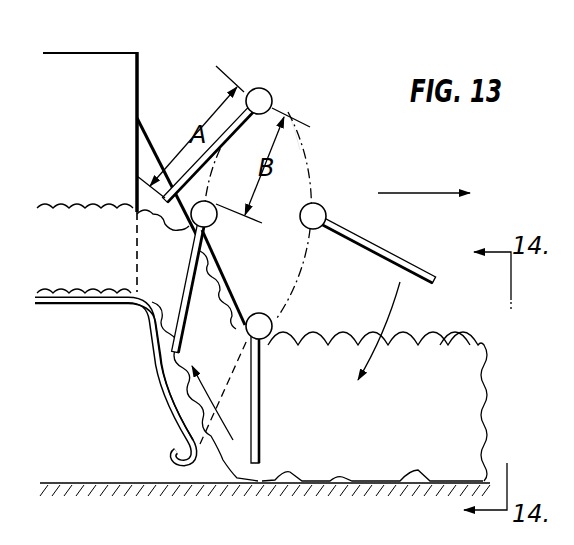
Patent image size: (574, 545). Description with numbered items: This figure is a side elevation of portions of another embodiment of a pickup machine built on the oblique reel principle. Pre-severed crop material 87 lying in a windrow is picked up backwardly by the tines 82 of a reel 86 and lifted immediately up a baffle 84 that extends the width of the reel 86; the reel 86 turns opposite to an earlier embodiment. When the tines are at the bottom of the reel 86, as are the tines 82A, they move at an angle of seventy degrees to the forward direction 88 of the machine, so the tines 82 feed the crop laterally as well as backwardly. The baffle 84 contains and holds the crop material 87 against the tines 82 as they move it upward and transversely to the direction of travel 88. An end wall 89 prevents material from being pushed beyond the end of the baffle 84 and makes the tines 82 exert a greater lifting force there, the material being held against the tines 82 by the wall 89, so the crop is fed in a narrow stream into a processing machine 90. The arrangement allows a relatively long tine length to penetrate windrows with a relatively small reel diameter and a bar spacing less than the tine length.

The tines 82 is at (396, 251).
The tines 82A is at (260, 432).
The baffle 84 is at (167, 415).
The reel 86 is at (324, 128).
The pre-severed crop material 87 is at (462, 338).
The forward direction 88 is at (399, 193).
The end wall 89 is at (140, 118).
The processing machine 90 is at (176, 60).